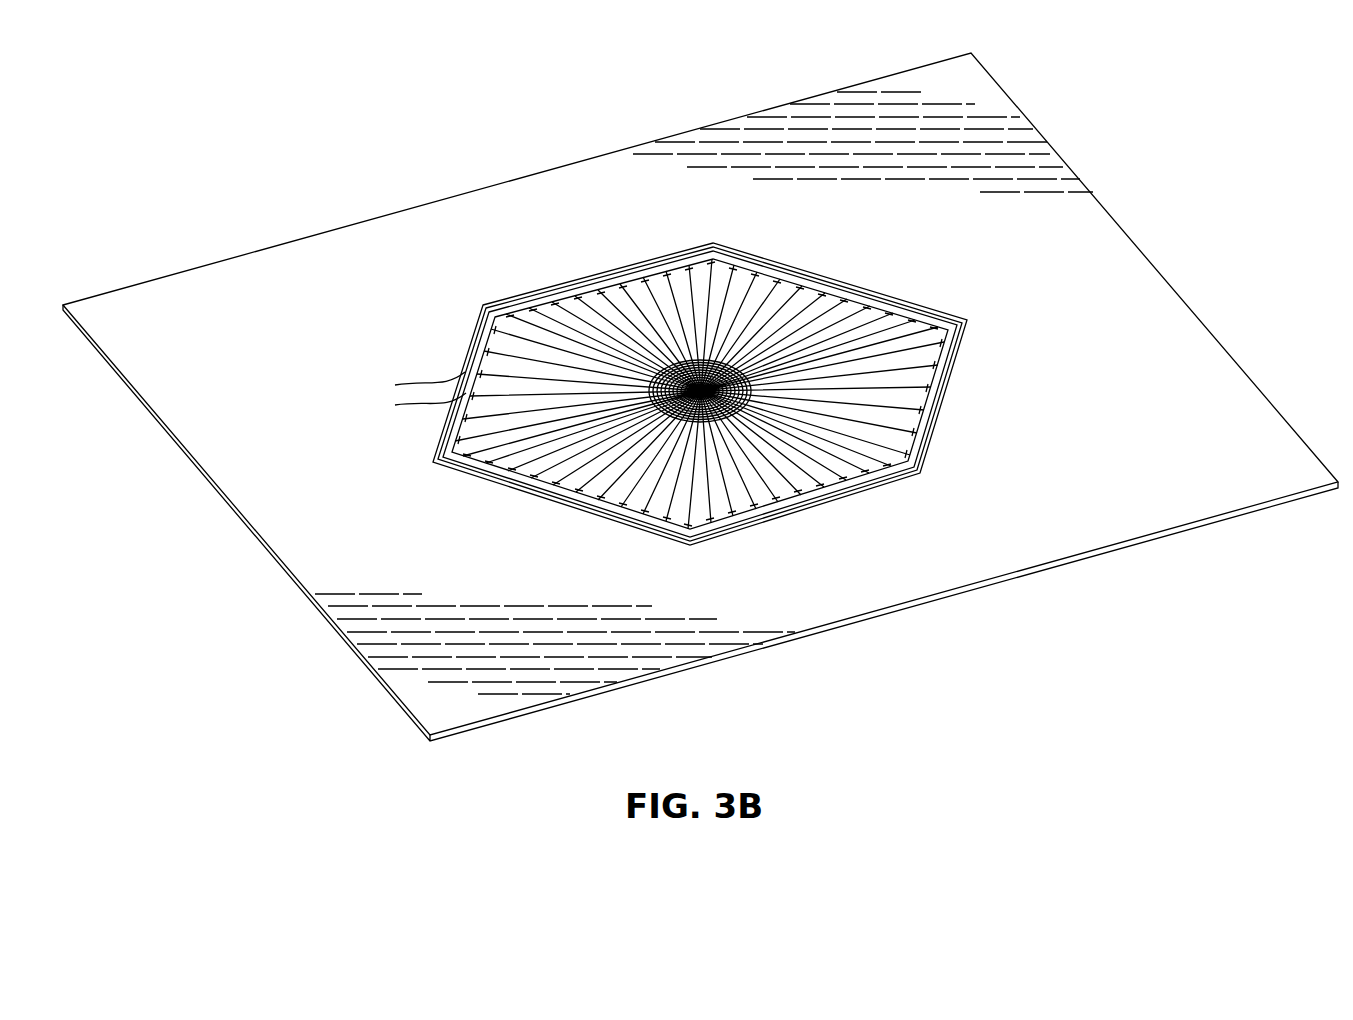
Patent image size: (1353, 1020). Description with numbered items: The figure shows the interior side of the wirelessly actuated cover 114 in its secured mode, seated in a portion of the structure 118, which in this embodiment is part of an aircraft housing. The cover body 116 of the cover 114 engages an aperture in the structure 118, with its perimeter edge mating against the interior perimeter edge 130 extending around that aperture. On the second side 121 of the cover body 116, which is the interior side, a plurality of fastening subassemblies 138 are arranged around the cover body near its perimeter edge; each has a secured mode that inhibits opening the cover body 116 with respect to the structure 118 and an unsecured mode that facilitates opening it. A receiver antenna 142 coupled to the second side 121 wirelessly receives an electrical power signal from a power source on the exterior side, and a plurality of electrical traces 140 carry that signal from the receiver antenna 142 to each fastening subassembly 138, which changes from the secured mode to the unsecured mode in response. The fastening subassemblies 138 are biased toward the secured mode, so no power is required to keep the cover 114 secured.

The structure 118 is at (242, 268).
The interior perimeter edge 130 is at (478, 325).
The wirelessly actuated cover 114 is at (472, 348).
The fastening subassemblies 138 is at (408, 388).
The second side 121 is at (553, 305).
The cover body 116 is at (633, 300).
The electrical traces 140 is at (648, 457).
The receiver antenna 142 is at (770, 468).